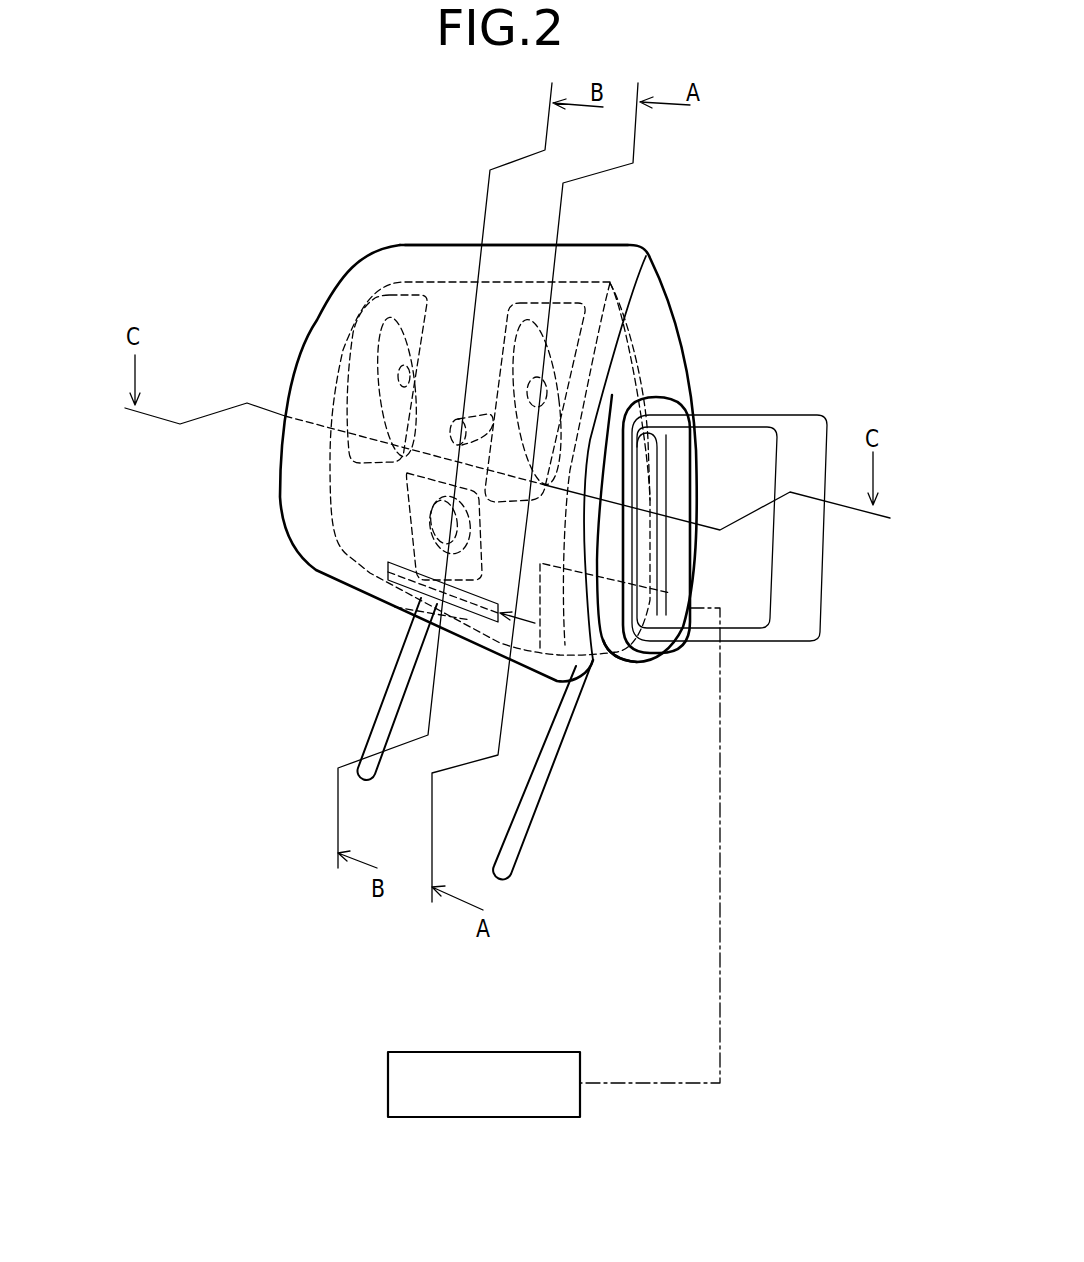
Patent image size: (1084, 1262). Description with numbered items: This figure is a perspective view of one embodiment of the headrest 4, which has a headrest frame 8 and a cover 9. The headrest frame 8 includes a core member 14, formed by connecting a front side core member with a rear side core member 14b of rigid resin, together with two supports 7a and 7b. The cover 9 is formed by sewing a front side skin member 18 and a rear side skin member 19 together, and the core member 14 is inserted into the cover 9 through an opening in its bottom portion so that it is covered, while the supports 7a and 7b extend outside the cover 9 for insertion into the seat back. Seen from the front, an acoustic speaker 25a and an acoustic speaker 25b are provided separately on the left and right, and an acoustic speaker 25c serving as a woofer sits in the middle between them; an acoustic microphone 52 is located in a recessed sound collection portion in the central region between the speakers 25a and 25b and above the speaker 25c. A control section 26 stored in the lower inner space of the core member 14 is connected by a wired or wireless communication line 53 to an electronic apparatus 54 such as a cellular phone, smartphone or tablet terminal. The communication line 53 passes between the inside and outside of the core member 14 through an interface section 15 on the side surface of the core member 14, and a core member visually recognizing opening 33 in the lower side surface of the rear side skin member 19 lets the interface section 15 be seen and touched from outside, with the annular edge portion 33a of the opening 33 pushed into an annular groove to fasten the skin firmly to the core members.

The headrest 4 is at (270, 206).
The support 7a is at (387, 700).
The support 7b is at (500, 838).
The headrest frame 8 is at (148, 498).
The cover 9 is at (762, 167).
The core member 14 is at (318, 502).
The rear side core member 14b is at (633, 369).
The interface section 15 is at (760, 430).
The front side skin member 18 is at (596, 254).
The rear side skin member 19 is at (657, 332).
The acoustic speaker 25a is at (527, 372).
The acoustic speaker 25b is at (393, 357).
The acoustic speaker 25c is at (435, 540).
The control section 26 is at (410, 582).
The core member visually recognizing opening 33 is at (813, 417).
The annular edge portion 33a is at (665, 482).
The acoustic microphone 52 is at (452, 430).
The communication line 53 is at (720, 855).
The electronic apparatus 54 is at (530, 1052).